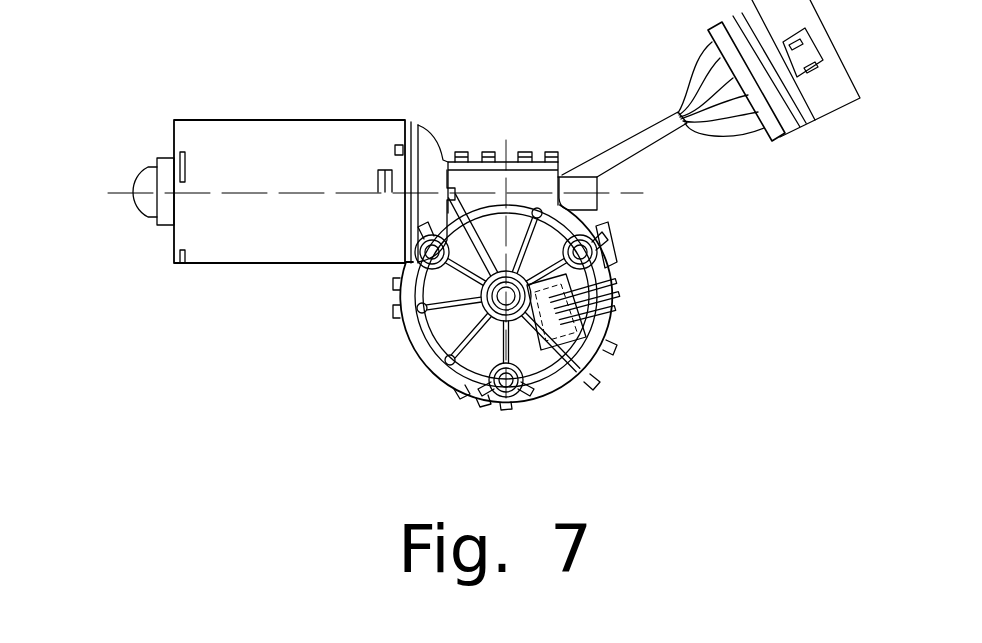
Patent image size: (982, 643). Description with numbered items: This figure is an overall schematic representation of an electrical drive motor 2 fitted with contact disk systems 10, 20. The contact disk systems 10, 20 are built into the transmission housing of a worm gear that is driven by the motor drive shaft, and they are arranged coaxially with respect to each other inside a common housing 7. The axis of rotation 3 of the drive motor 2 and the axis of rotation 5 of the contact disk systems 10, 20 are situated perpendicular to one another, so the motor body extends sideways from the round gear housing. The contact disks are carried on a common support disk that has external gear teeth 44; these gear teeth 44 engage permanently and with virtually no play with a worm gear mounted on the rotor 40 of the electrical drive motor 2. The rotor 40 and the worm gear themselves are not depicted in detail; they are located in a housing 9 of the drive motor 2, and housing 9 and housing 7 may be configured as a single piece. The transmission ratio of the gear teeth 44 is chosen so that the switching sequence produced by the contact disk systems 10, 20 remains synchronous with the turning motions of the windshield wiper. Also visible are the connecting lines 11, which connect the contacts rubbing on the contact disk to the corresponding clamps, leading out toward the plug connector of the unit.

The electrical drive motor 2 is at (238, 133).
The axis of rotation 3 is at (279, 190).
The rotor 40 is at (428, 190).
The housing 9 is at (513, 163).
The external gear teeth 44 is at (537, 190).
The housing 7 is at (413, 325).
The axis of rotation 5 is at (496, 303).
The connecting lines 11 is at (622, 280).
The contact disk system 10 is at (482, 251).
The contact disk system 20 is at (482, 251).